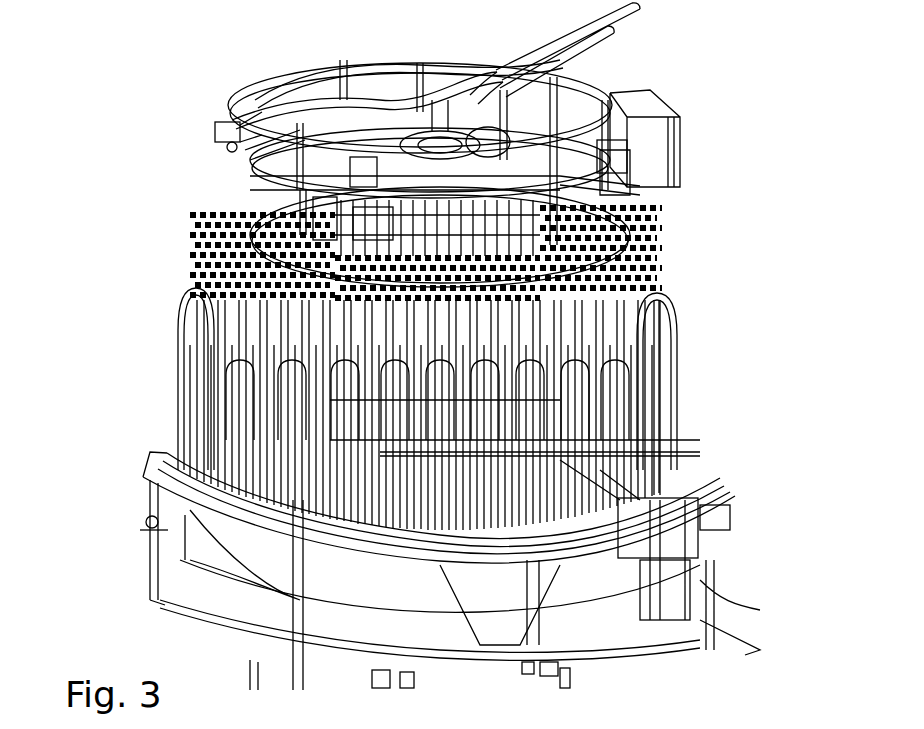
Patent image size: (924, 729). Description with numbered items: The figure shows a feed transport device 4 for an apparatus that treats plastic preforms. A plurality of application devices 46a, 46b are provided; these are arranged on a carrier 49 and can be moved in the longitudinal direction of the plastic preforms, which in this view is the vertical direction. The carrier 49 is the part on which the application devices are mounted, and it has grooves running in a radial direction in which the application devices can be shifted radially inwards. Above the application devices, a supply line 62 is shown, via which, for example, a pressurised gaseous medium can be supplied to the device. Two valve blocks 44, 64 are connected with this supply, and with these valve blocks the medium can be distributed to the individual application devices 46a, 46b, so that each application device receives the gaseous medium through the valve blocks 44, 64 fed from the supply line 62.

The filling machine 4 is at (138, 342).
The valve block 44 is at (640, 152).
The application device 46a is at (672, 420).
The application device 46b is at (670, 447).
The carrier 49 is at (600, 453).
The supply line 62 is at (573, 45).
The valve block 64 is at (215, 127).